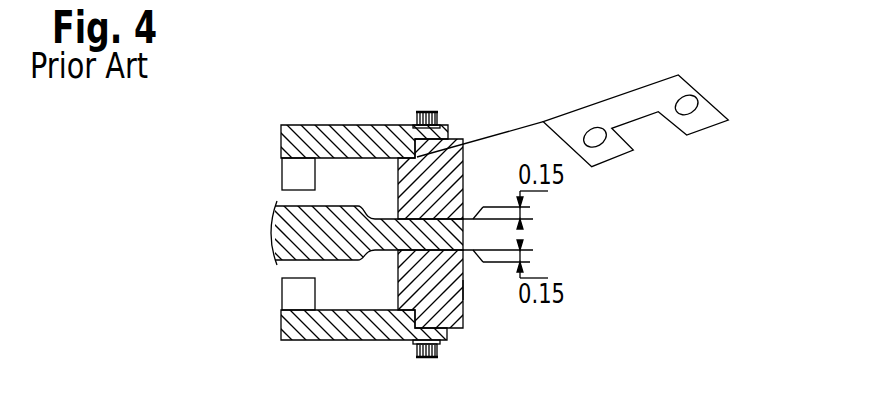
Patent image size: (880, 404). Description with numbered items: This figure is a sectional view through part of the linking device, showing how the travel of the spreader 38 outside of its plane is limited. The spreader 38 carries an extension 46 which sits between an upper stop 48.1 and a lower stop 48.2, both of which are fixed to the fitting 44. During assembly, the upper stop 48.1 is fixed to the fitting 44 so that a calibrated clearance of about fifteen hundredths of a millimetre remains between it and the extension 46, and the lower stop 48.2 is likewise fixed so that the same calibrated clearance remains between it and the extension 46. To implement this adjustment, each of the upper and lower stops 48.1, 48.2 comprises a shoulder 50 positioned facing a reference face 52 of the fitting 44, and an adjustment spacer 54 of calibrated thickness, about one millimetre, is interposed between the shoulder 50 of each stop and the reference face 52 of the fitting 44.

The spreader 38 is at (280, 236).
The fitting 44 is at (330, 131).
The extension 46 is at (463, 291).
The upper stop 48.1 is at (462, 183).
The lower stop 48.2 is at (450, 290).
The shoulder 50 is at (416, 157).
The reference face 52 is at (370, 158).
The adjustment spacer 54 is at (688, 84).